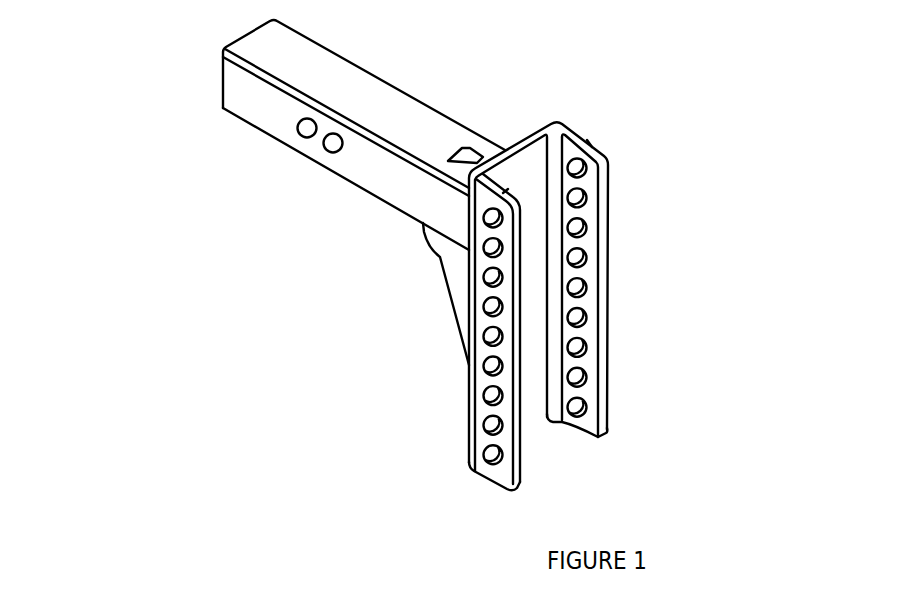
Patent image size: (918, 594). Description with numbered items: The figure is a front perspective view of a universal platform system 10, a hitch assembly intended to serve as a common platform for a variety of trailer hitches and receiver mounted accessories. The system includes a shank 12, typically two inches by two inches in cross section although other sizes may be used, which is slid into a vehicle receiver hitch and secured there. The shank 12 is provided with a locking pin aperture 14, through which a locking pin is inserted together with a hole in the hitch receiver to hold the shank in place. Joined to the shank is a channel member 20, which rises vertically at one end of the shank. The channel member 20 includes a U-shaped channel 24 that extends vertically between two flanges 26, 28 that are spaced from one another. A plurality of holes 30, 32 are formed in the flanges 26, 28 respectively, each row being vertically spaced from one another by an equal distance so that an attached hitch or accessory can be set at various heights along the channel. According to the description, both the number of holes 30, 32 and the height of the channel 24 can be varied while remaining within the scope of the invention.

The universal platform system 10 is at (188, 182).
The shank 12 is at (405, 90).
The locking pin aperture 14 is at (325, 149).
The channel member 20 is at (634, 128).
The U-shaped channel 24 is at (533, 415).
The flange 26 is at (468, 375).
The flange 28 is at (608, 270).
The holes 30 is at (484, 429).
The holes 32 is at (586, 351).